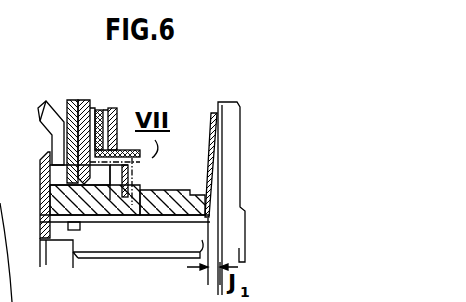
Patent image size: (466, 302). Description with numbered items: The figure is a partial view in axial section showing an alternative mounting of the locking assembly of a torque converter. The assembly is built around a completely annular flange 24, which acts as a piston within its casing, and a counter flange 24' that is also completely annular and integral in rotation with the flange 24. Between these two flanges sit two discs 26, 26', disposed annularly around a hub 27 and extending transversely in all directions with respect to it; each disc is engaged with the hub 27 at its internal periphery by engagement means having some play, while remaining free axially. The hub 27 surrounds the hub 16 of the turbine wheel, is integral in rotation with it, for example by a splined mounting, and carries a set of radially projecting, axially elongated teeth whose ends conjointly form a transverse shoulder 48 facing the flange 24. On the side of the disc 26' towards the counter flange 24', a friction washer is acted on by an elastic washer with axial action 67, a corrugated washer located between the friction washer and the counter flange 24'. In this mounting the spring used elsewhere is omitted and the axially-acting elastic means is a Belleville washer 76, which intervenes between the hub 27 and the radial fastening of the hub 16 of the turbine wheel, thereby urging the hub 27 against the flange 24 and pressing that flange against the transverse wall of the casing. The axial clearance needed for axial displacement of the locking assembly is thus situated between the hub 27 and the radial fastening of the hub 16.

The hub of turbine wheel 16 is at (178, 250).
The flange 24 is at (38, 126).
The counter flange 24' is at (145, 109).
The disc 26 is at (61, 125).
The disc 26' is at (95, 123).
The hub 27 is at (168, 189).
The transverse shoulder 48 is at (42, 185).
The elastic washer with axial action 67 is at (101, 110).
The Belleville washer 76 is at (217, 135).